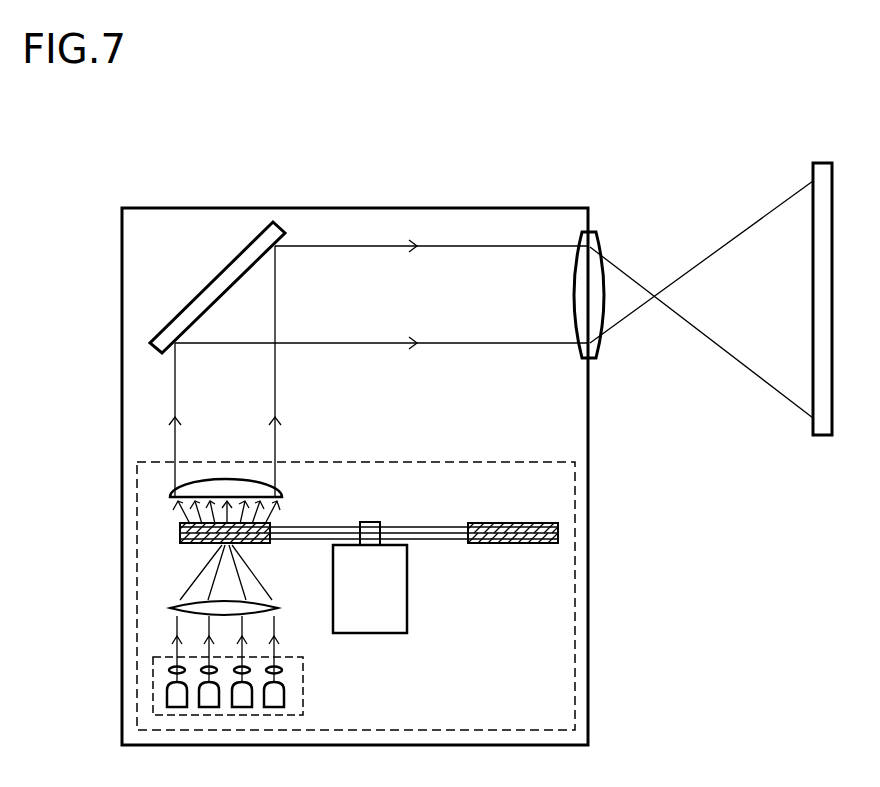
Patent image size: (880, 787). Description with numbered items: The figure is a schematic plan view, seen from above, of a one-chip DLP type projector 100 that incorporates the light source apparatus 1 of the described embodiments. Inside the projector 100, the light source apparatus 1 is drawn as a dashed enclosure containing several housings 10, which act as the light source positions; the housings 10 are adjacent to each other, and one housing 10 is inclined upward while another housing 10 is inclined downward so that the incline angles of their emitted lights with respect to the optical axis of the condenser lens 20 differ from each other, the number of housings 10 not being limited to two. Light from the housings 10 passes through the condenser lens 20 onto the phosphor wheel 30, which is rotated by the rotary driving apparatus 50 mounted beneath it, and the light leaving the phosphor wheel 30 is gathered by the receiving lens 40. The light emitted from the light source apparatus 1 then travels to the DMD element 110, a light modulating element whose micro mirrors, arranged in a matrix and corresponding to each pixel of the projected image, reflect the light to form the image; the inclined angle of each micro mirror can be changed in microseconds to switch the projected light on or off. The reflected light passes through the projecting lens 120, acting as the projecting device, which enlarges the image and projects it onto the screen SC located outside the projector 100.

The light source apparatus 1 is at (412, 462).
The housing 10 is at (306, 687).
The condenser lens 20 is at (281, 602).
The phosphor wheel 30 is at (426, 526).
The receiving lens 40 is at (284, 497).
The rotary driving apparatus 50 is at (409, 594).
The projector 100 is at (360, 208).
The DMD element 110 is at (212, 280).
The projecting lens 120 is at (604, 240).
The screen SC is at (828, 162).